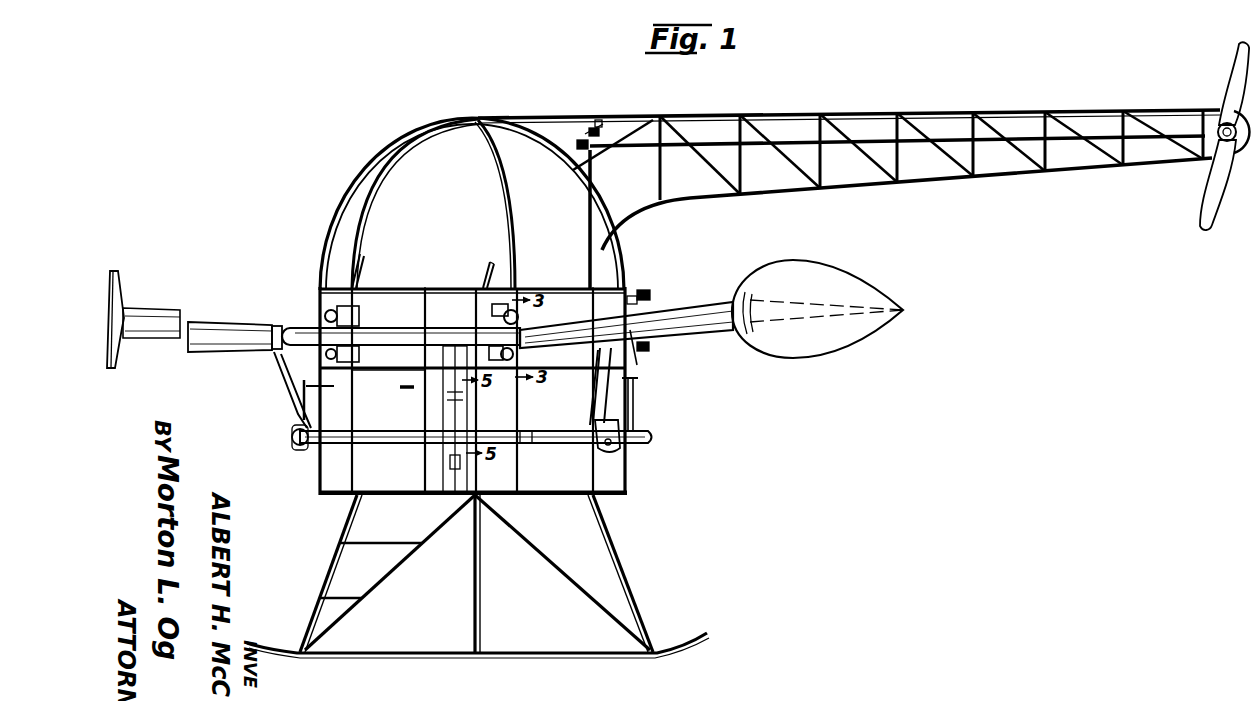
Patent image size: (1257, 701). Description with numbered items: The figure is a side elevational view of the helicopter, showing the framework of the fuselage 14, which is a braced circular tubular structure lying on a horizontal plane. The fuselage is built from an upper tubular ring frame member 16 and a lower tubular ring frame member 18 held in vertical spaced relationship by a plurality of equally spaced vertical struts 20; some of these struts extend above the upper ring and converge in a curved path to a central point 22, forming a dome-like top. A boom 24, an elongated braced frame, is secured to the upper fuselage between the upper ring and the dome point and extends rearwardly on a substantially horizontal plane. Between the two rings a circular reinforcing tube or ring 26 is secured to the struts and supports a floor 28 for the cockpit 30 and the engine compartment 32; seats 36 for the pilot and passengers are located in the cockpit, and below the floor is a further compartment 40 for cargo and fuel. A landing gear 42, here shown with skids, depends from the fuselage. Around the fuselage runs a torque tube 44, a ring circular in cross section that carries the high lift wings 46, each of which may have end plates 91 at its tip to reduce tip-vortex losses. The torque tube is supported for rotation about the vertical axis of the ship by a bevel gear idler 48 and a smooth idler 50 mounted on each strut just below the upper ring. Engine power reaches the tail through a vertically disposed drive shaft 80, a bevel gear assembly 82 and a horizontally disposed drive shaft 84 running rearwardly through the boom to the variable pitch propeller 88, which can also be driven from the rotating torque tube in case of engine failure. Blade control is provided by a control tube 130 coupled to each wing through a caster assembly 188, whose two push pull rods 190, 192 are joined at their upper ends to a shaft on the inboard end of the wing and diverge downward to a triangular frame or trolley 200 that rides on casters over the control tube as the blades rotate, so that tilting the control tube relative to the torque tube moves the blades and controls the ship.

The fuselage 14 is at (318, 222).
The upper tubular ring frame member 16 is at (414, 287).
The lower tubular ring frame member 18 is at (400, 500).
The vertical struts 20 is at (439, 290).
The central point 22 is at (456, 111).
The boom 24 is at (858, 112).
The circular reinforcing tube or ring 26 is at (393, 384).
The floor 28 is at (380, 378).
The cockpit 30 is at (382, 286).
The engine compartment 32 is at (553, 288).
The seats 36 is at (483, 262).
The compartment 40 is at (562, 492).
The landing gear 42 is at (634, 580).
The torque tube 44 is at (300, 326).
The high lift wings 46 is at (222, 322).
The bevel gear idler 48 is at (319, 313).
The smooth idler 50 is at (312, 356).
The vertically disposed drive shaft 80 is at (588, 221).
The bevel gear assembly 82 is at (585, 140).
The horizontally disposed drive shaft 84 is at (940, 130).
The variable pitch propeller 88 is at (1203, 192).
The end plates 91 is at (118, 282).
The control tube 130 is at (293, 438).
The caster assembly 188 is at (299, 456).
The push pull rod 190 is at (592, 400).
The push pull rod 192 is at (634, 400).
The triangular frame or trolley 200 is at (625, 450).